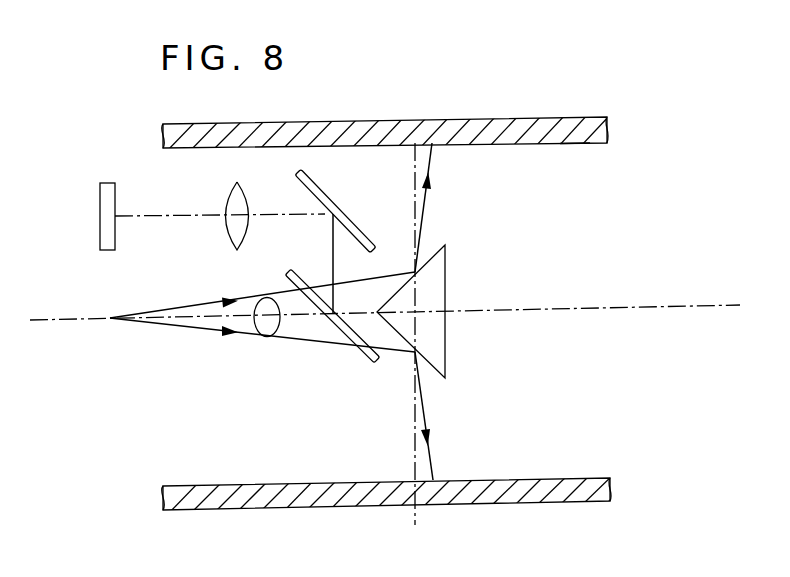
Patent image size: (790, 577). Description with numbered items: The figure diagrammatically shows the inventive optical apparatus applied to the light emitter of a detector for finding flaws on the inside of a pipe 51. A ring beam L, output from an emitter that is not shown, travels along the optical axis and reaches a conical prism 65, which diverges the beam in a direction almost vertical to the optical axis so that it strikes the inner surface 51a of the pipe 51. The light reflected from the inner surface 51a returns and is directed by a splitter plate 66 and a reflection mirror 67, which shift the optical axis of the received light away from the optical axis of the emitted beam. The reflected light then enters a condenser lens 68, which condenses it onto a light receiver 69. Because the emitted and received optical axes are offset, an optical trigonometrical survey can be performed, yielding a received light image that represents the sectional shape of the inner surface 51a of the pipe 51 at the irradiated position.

The pipe 51 is at (570, 116).
The inner surface 51a is at (585, 145).
The conical prism 65 is at (448, 262).
The splitter plate 66 is at (360, 352).
The reflection mirror 67 is at (320, 182).
The condenser lens 68 is at (227, 202).
The light receiver 69 is at (97, 203).
The ring beam L is at (250, 328).